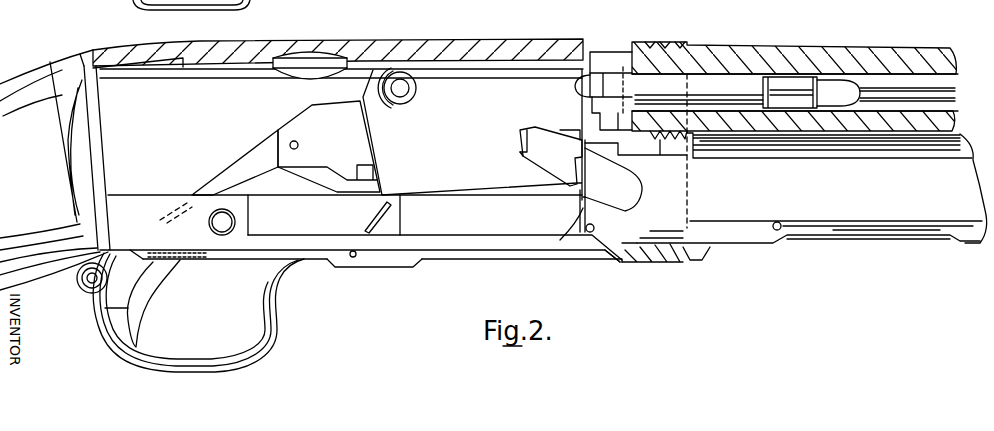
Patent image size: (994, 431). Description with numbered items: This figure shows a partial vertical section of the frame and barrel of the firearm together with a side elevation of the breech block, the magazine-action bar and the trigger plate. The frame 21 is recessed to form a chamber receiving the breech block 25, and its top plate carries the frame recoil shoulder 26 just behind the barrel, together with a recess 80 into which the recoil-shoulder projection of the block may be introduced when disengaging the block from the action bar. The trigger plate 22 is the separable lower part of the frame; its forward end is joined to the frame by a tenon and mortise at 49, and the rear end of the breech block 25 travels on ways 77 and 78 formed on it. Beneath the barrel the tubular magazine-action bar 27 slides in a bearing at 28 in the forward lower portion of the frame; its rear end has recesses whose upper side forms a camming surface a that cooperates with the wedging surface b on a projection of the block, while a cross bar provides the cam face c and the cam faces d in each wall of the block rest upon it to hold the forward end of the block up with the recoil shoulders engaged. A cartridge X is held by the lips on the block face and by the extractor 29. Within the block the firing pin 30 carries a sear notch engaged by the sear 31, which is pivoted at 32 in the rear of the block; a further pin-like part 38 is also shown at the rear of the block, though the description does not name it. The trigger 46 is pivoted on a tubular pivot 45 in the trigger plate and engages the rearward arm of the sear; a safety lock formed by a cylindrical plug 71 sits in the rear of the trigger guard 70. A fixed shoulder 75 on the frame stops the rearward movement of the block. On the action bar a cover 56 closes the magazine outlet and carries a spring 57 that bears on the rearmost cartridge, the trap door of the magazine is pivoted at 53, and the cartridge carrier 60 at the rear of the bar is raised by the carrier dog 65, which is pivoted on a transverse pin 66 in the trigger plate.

The frame 21 is at (423, 40).
The trigger plate 22 is at (438, 259).
The breech block 25 is at (430, 135).
The frame recoil shoulder 26 is at (592, 52).
The action bar 27 is at (630, 196).
The bearing 28 is at (641, 262).
The extractor 29 is at (604, 78).
The firing pin 30 is at (520, 134).
The sear 31 is at (223, 177).
The sear pivot 32 is at (292, 141).
The firing pin 38 is at (399, 96).
The tubular pivot 45 is at (210, 225).
The trigger 46 is at (152, 275).
The tenon and mortise 49 is at (624, 262).
The trap door pivot 53 is at (781, 222).
The cover 56 is at (885, 146).
The spring 57 is at (773, 142).
The cartridge carrier 60 is at (706, 256).
The carrier dog 65 is at (370, 214).
The transverse pin 66 is at (354, 267).
The trigger guard 70 is at (262, 305).
The cylindrical plug 71 is at (80, 292).
The fixed shoulder 75 is at (93, 105).
The way 77 is at (277, 198).
The way 78 is at (138, 193).
The recess 80 is at (318, 53).
The cartridge X is at (795, 91).
The camming surface a is at (617, 188).
The wedging surface b is at (533, 152).
The cam face c is at (636, 162).
The cam face d is at (553, 128).